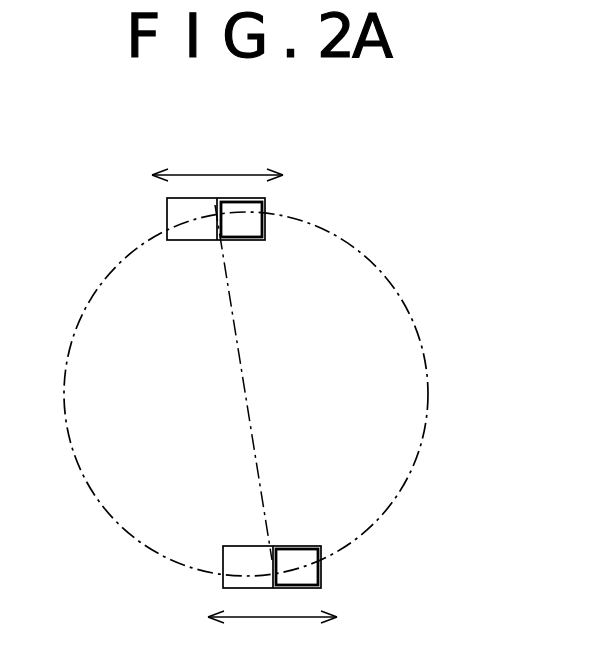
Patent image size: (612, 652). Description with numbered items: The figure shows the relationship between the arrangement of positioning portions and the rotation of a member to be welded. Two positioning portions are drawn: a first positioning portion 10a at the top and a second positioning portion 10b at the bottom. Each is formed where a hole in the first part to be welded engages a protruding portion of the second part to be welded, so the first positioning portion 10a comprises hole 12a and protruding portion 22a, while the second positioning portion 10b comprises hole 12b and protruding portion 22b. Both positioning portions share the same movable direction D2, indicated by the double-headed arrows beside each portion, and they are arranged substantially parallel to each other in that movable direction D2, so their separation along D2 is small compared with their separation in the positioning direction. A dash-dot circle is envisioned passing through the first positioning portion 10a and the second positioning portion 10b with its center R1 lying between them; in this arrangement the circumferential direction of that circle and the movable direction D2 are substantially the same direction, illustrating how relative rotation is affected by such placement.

The first positioning portion 10a is at (132, 235).
The second positioning portion 10b is at (302, 532).
The hole 12a is at (192, 198).
The hole 12b is at (243, 546).
The protruding portion 22a is at (137, 199).
The protruding portion 22b is at (275, 555).
The center R1 is at (246, 394).
The movable direction D2 is at (271, 398).